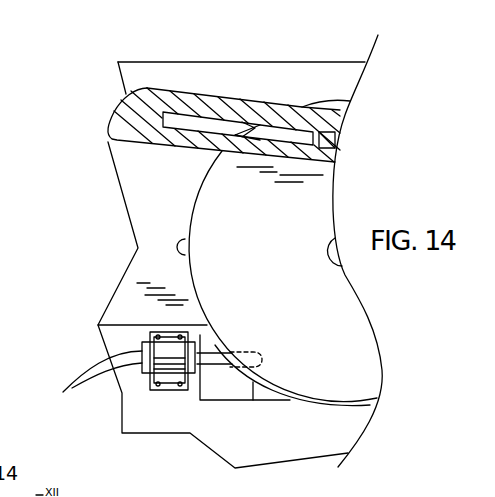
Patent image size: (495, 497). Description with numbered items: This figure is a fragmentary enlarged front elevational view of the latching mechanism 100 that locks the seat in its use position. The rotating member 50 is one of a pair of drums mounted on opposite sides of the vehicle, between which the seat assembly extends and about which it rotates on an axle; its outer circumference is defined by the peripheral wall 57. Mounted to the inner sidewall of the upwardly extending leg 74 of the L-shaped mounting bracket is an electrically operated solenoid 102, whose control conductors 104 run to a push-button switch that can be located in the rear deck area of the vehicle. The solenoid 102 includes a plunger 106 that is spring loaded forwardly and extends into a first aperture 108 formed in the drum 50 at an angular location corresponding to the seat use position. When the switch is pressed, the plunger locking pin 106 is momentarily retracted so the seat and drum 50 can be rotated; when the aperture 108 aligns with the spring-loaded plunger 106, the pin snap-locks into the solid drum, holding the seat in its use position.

The rotating member 50 is at (195, 186).
The peripheral wall 57 is at (191, 241).
The leg 74 is at (158, 263).
The latching mechanism 100 is at (133, 307).
The solenoid 102 is at (168, 370).
The control conductors 104 is at (63, 392).
The plunger 106 is at (212, 363).
The first aperture 108 is at (260, 359).